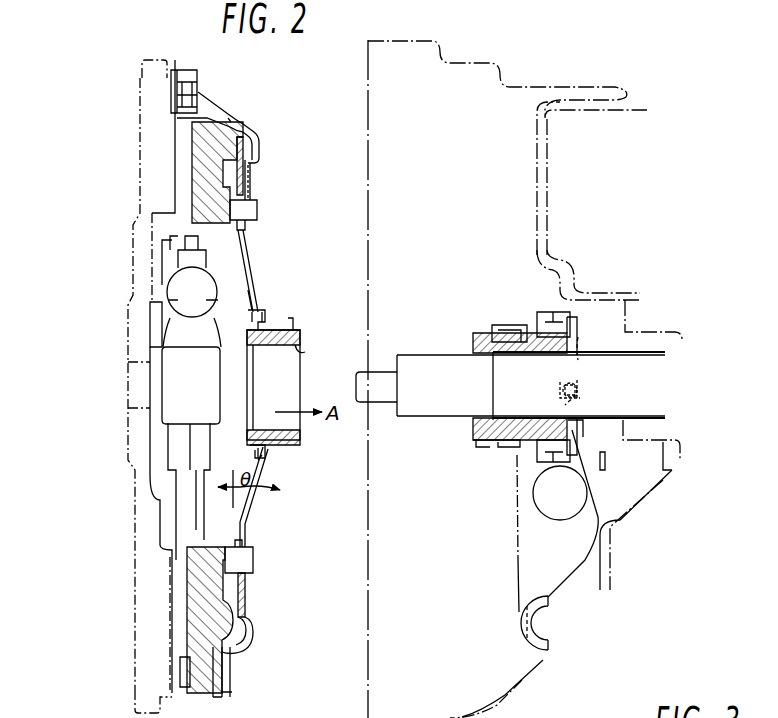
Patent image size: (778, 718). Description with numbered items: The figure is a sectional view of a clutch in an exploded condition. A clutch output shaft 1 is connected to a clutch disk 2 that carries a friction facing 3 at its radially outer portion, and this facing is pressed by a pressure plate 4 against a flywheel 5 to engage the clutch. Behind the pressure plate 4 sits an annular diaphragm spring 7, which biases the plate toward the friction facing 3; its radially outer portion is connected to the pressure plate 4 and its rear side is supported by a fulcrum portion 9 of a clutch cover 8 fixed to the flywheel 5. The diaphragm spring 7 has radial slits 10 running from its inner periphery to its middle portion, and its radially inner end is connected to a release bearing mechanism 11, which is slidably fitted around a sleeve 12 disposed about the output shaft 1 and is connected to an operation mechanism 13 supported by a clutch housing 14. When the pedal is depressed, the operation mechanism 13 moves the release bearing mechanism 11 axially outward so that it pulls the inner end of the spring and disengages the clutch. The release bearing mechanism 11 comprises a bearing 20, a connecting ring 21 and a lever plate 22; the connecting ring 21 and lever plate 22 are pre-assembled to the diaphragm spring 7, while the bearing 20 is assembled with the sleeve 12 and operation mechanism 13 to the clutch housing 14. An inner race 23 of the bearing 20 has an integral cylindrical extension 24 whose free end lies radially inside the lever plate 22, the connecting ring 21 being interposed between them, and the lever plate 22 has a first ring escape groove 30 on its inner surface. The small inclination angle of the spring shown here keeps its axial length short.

The clutch output shaft 1 is at (412, 418).
The clutch disk 2 is at (172, 492).
The friction facing 3 is at (172, 158).
The pressure plate 4 is at (231, 124).
The flywheel 5 is at (158, 128).
The diaphragm spring 7 is at (252, 240).
The clutch cover 8 is at (226, 110).
The fulcrum portion 9 is at (255, 141).
The radial slits 10 is at (255, 277).
The release bearing mechanism 11 is at (395, 306).
The sleeve 12 is at (495, 362).
The operation mechanism 13 is at (578, 346).
The clutch housing 14 is at (522, 232).
The bearing 20 is at (543, 311).
The connecting ring 21 is at (292, 352).
The lever plate 22 is at (300, 444).
The inner race 23 is at (543, 418).
The cylindrical extension 24 is at (470, 444).
The first ring escape groove 30 is at (280, 455).